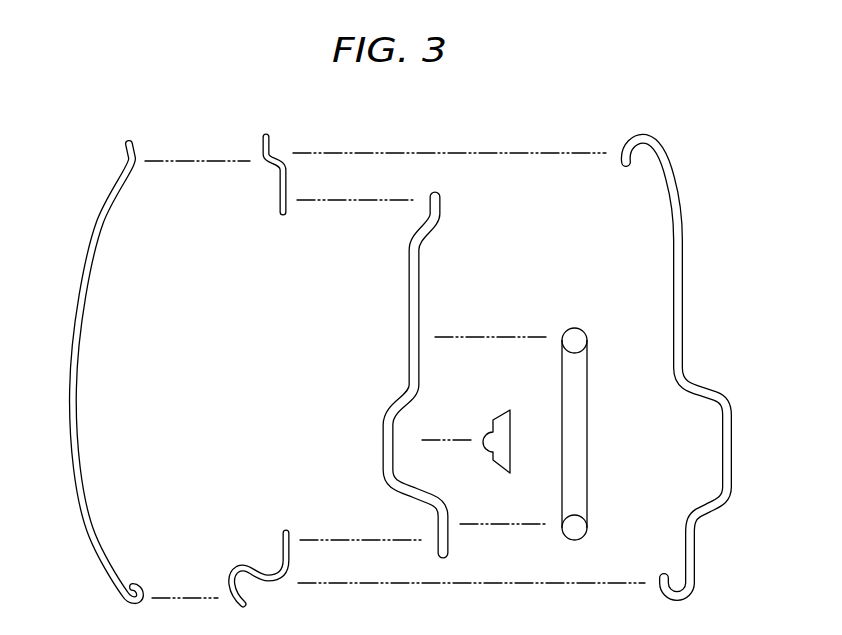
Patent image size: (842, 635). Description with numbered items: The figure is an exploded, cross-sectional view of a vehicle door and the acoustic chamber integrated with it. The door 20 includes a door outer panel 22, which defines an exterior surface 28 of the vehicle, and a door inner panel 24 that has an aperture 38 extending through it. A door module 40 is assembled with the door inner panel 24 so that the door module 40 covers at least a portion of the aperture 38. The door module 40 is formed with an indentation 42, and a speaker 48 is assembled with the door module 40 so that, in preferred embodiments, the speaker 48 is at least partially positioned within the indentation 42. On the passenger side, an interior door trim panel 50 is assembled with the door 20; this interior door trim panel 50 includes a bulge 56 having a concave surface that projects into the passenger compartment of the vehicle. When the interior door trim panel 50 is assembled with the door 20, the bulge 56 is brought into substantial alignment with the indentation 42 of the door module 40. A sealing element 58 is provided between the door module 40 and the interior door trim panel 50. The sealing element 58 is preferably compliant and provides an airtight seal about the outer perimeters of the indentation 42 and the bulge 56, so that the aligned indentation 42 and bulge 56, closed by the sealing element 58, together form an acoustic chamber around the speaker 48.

The door 20 is at (199, 128).
The door outer panel 22 is at (100, 220).
The door inner panel 24 is at (280, 198).
The exterior surface 28 is at (90, 533).
The aperture 38 is at (240, 377).
The door module 40 is at (420, 283).
The indentation 42 is at (390, 440).
The speaker 48 is at (500, 410).
The interior door trim panel 50 is at (659, 152).
The bulge 56 is at (731, 414).
The sealing element 58 is at (572, 327).